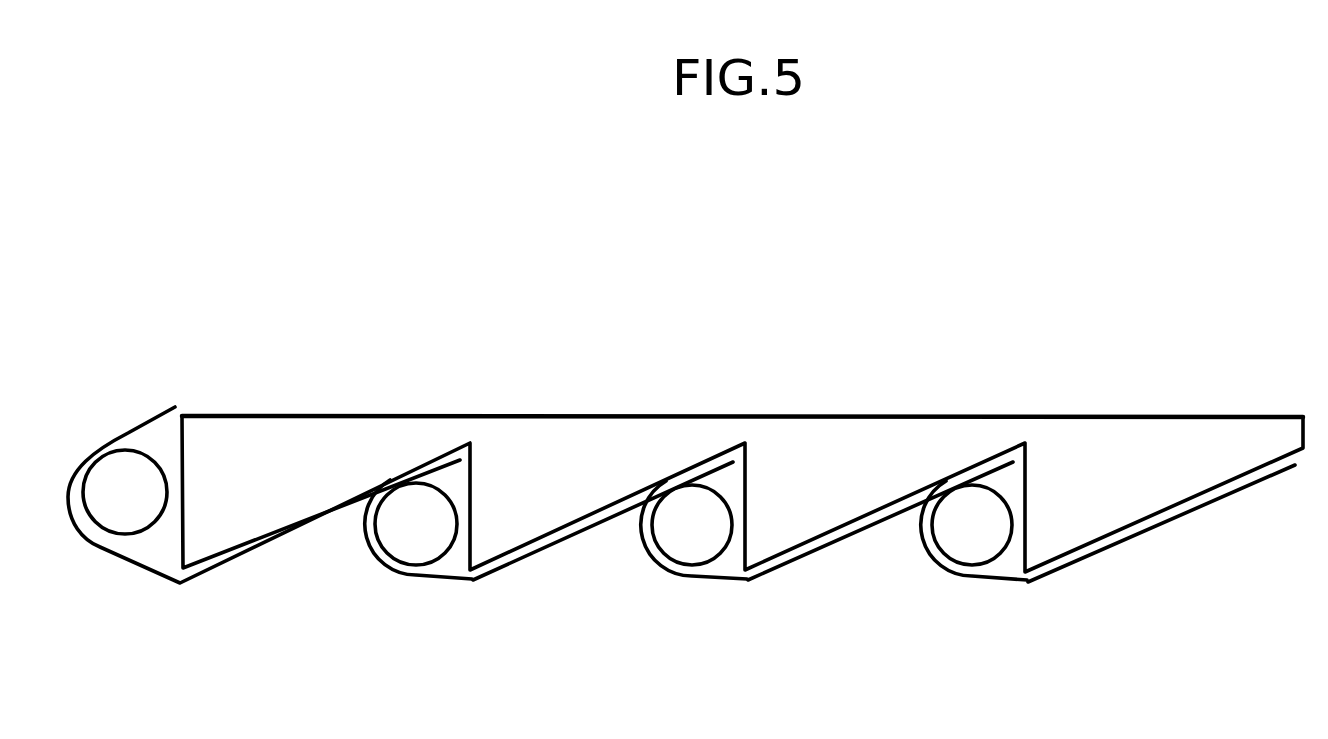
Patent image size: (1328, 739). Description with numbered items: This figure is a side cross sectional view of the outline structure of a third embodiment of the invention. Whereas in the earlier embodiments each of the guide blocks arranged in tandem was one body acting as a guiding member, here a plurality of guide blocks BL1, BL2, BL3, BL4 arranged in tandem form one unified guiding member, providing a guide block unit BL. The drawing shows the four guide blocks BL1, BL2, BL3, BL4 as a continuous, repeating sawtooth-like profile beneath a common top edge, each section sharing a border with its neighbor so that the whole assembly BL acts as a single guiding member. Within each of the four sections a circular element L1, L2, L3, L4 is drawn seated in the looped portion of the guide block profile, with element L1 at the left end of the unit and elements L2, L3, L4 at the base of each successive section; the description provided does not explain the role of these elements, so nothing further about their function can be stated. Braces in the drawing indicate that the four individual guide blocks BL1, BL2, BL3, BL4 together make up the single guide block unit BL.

The guide block unit BL is at (1237, 320).
The guide block BL1 is at (465, 406).
The guide block BL2 is at (743, 406).
The guide block BL3 is at (1022, 406).
The guide block BL4 is at (1295, 406).
The first lamp L1 is at (118, 512).
The second lamp L2 is at (408, 538).
The third lamp L3 is at (684, 540).
The fourth lamp L4 is at (965, 545).